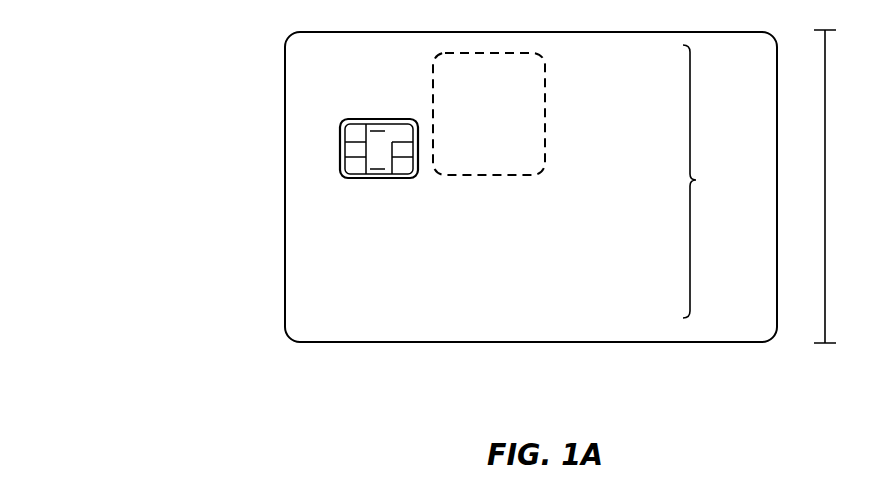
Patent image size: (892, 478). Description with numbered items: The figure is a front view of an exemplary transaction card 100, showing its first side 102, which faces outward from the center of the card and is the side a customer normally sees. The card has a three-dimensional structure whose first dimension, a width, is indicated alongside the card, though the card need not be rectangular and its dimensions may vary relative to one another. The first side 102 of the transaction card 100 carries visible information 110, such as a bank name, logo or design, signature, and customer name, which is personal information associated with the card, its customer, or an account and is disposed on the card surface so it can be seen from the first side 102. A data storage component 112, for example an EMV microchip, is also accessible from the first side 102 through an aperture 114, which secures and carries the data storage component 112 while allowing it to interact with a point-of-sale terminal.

The transaction card 100 is at (449, 218).
The first side 102 is at (200, 73).
The visible information 110 is at (535, 181).
The data storage component 112 is at (380, 149).
The aperture 114 is at (340, 131).